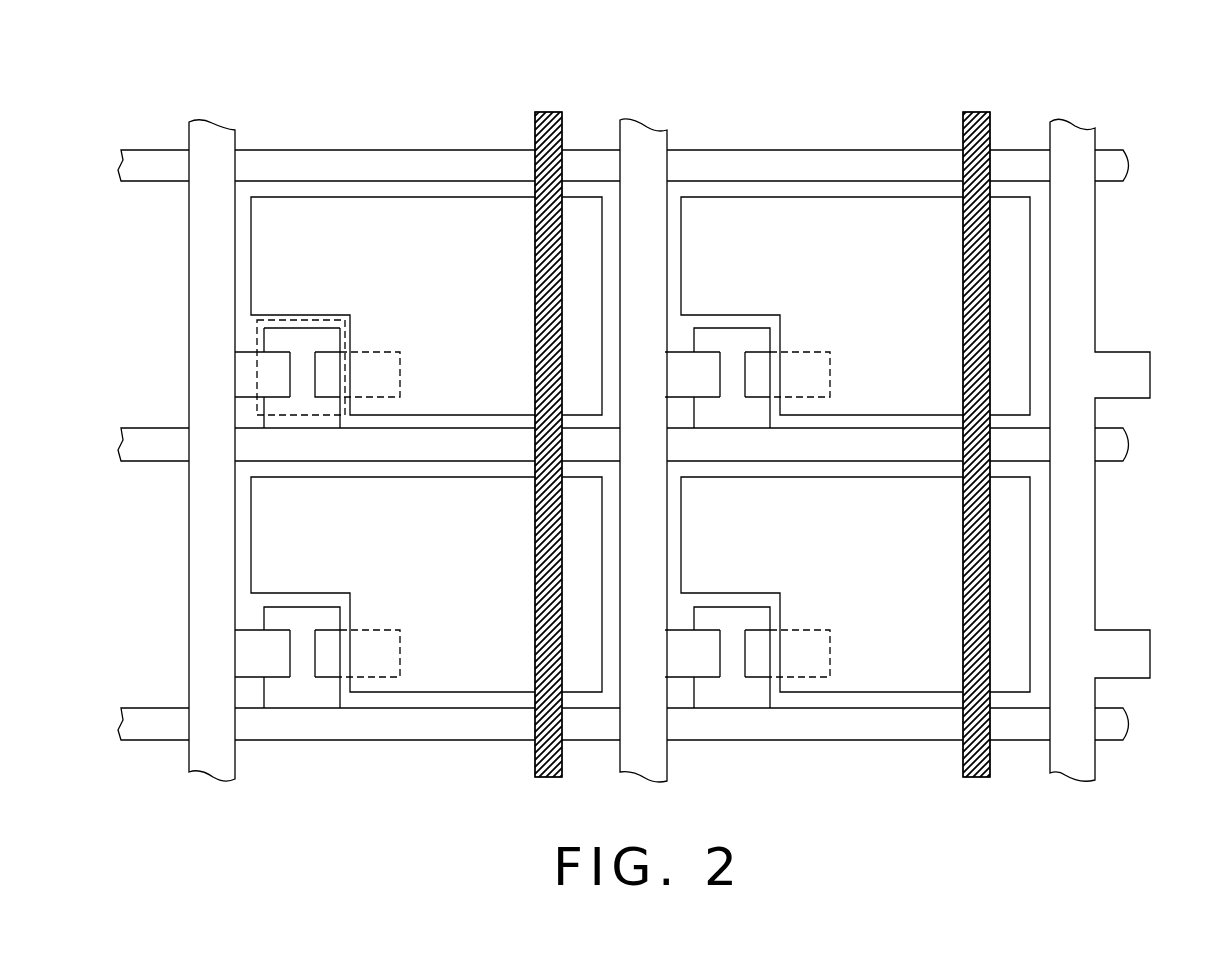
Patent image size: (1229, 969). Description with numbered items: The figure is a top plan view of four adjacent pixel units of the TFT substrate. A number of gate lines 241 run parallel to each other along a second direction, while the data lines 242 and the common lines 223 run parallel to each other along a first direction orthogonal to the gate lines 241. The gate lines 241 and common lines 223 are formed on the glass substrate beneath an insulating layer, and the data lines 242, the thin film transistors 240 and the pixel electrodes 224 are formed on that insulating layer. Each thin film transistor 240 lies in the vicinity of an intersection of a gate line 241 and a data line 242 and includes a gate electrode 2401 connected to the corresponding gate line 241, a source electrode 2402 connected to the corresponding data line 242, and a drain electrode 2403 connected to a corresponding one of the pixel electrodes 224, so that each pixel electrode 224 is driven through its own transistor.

The common line 223 is at (540, 120).
The pixel electrode 224 is at (400, 235).
The thin film transistor 240 is at (443, 493).
The gate electrode 2401 is at (295, 342).
The source electrode 2402 is at (268, 380).
The drain electrode 2403 is at (333, 382).
The gate line 241 is at (820, 165).
The data line 242 is at (211, 143).